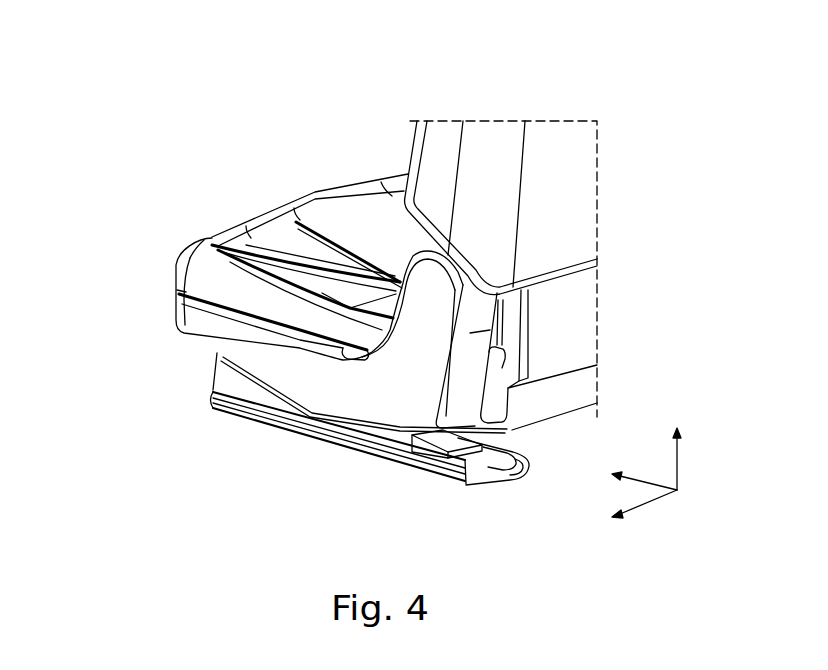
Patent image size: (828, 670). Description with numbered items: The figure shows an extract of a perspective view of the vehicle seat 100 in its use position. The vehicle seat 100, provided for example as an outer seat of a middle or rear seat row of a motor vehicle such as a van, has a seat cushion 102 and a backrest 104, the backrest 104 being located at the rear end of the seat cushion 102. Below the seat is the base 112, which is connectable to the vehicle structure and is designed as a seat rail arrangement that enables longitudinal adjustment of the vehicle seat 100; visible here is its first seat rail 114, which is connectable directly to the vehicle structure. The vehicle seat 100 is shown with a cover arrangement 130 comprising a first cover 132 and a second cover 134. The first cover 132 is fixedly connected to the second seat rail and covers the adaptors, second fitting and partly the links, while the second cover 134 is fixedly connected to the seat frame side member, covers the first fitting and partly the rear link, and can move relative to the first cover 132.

The vehicle seat 100 is at (197, 79).
The seat cushion 102 is at (201, 252).
The backrest 104 is at (441, 128).
The base 112 is at (328, 450).
The first seat rail 114 is at (405, 480).
The cover arrangement 130 is at (188, 353).
The first cover 132 is at (226, 379).
The second cover 134 is at (182, 311).